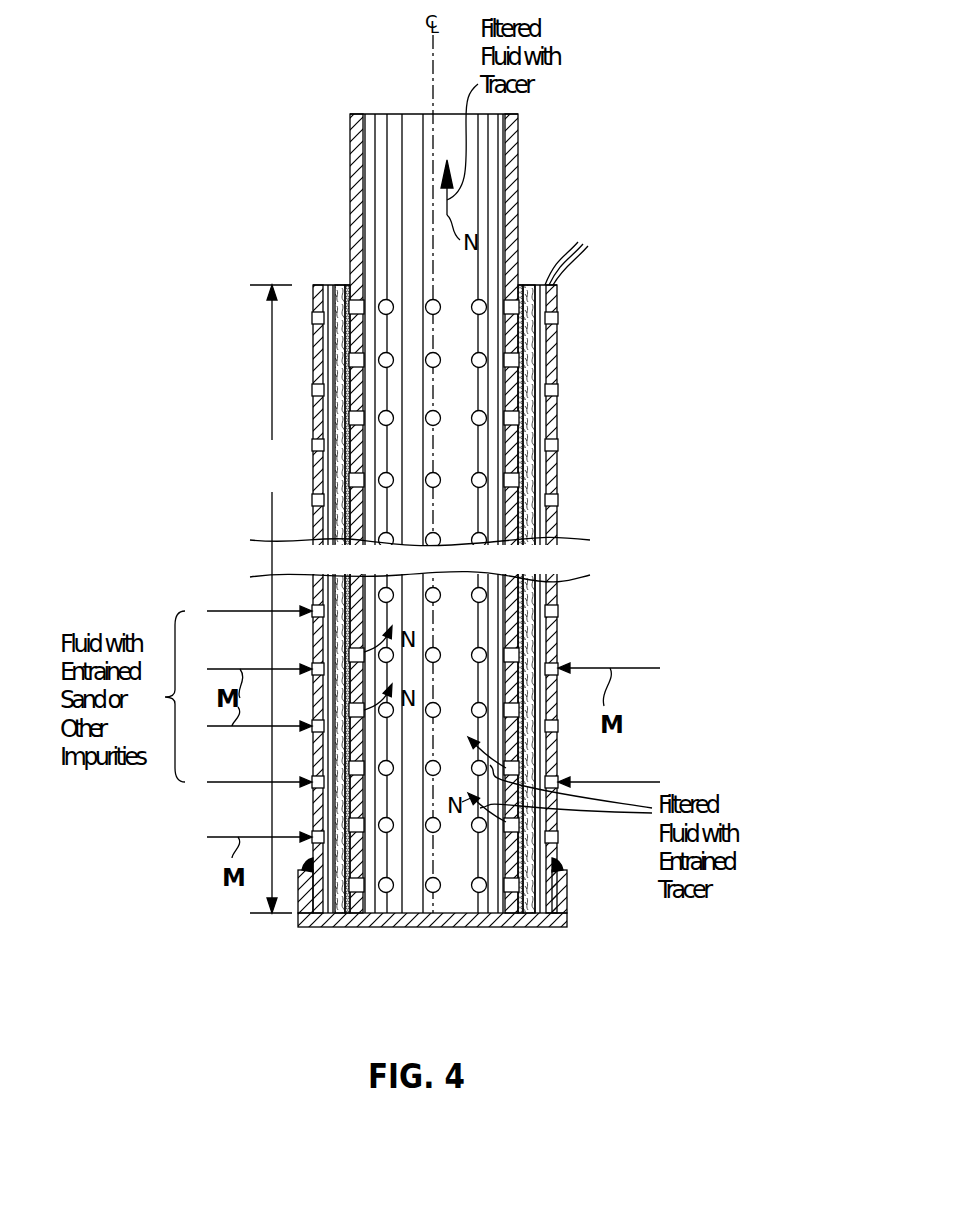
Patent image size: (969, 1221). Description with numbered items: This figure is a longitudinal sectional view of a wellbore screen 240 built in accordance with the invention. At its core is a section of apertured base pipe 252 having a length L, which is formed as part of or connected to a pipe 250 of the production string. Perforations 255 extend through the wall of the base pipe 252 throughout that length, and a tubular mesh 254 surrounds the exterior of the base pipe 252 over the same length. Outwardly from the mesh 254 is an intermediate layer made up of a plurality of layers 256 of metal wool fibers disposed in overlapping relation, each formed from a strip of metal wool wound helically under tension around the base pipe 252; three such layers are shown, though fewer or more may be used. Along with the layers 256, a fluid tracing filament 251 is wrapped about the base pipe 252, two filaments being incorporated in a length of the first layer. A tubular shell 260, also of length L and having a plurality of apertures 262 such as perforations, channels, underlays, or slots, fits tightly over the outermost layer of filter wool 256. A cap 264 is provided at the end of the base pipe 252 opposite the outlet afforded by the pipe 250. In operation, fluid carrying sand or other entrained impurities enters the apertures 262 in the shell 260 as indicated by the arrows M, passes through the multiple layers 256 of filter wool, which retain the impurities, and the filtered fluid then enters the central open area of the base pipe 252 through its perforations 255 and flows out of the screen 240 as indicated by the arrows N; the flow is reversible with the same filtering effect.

The wellbore screen 240 is at (236, 332).
The pipe of the production string 250 is at (520, 198).
The fluid tracing filament 251 is at (330, 522).
The apertured base pipe 252 is at (358, 300).
The tubular mesh 254 is at (550, 318).
The perforations 255 is at (345, 392).
The layers of metal wool fibers 256 is at (575, 250).
The tubular shell 260 is at (325, 420).
The apertures 262 is at (552, 496).
The cap 264 is at (475, 927).